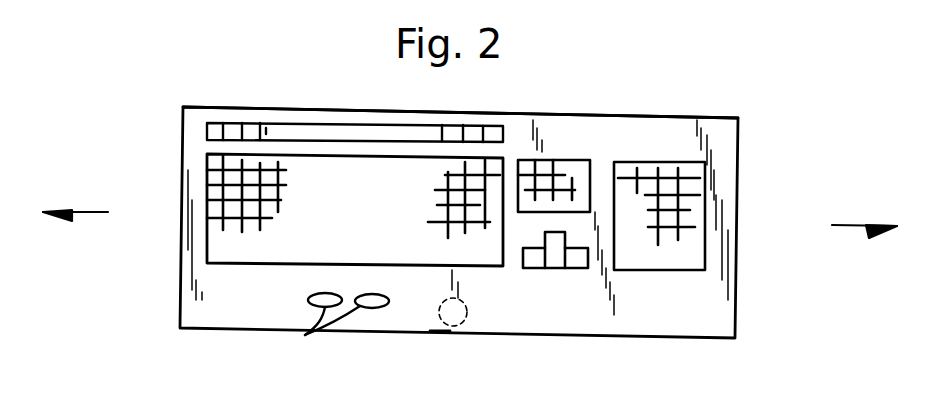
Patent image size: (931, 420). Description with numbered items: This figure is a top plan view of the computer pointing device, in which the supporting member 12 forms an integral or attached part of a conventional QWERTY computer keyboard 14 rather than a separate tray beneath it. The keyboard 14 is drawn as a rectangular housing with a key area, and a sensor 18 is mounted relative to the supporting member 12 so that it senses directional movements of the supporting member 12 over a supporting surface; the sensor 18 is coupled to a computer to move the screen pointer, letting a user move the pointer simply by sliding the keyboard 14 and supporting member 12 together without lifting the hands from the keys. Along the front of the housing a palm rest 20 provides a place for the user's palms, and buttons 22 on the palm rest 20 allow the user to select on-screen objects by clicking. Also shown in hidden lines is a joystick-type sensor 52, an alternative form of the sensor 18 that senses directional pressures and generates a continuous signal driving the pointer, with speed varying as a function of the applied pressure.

The supporting member 12 is at (738, 265).
The QWERTY computer keyboard 14 is at (747, 108).
The sensor 18 is at (430, 330).
The palm rest 20 is at (645, 322).
The buttons 22 is at (305, 335).
The joystick-type sensor 52 is at (480, 333).